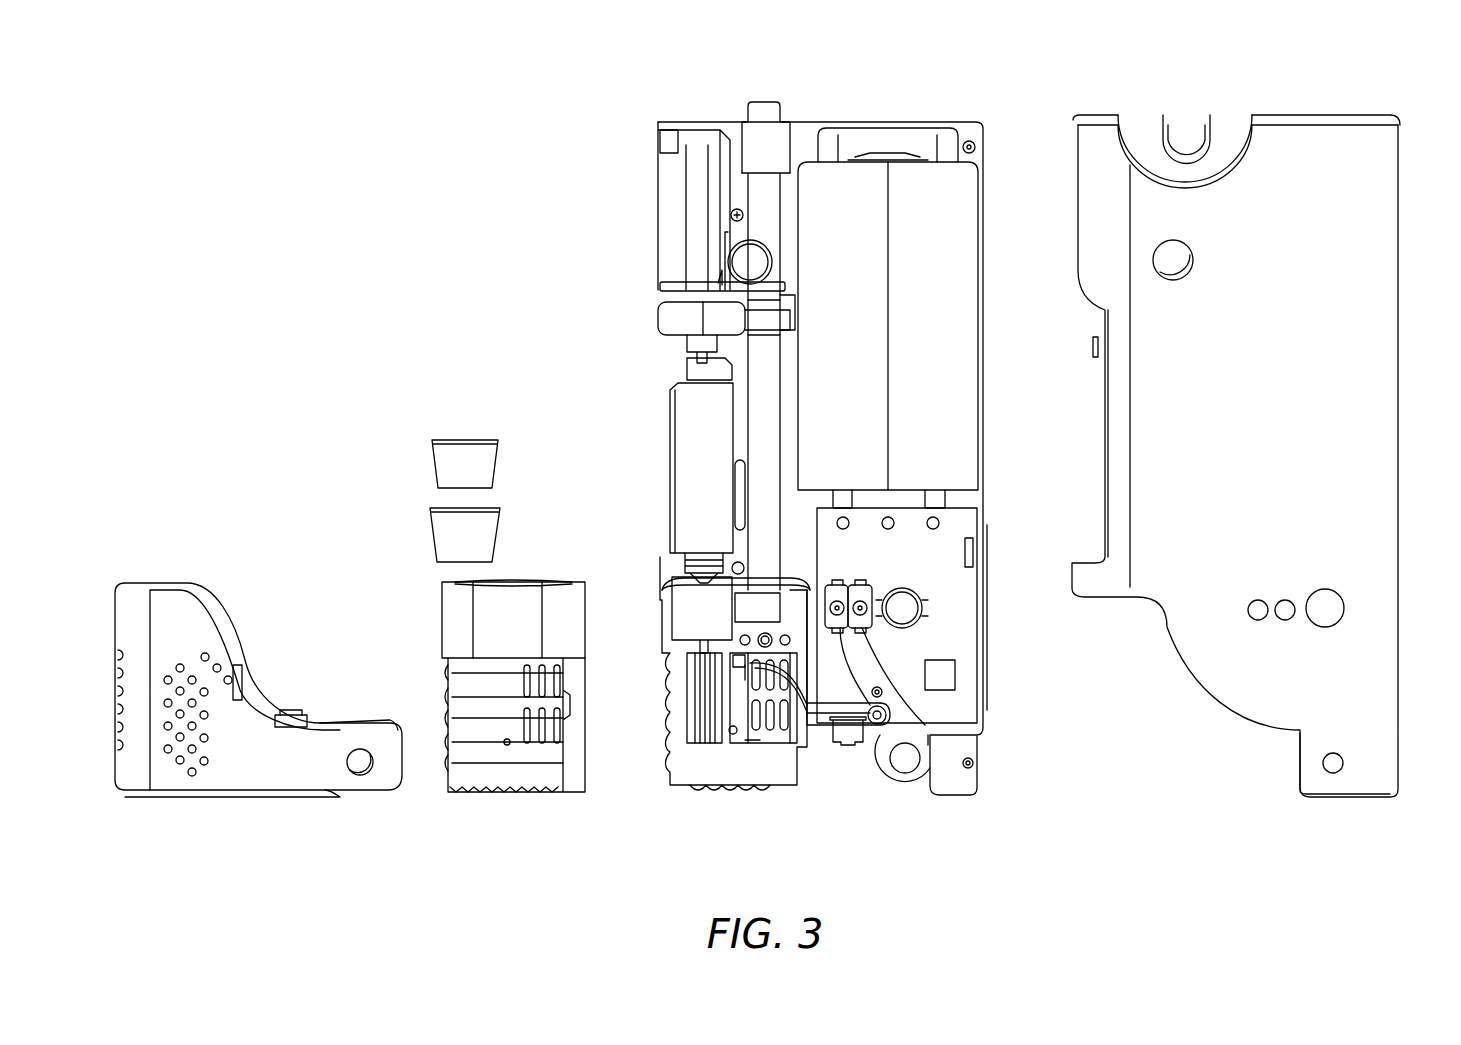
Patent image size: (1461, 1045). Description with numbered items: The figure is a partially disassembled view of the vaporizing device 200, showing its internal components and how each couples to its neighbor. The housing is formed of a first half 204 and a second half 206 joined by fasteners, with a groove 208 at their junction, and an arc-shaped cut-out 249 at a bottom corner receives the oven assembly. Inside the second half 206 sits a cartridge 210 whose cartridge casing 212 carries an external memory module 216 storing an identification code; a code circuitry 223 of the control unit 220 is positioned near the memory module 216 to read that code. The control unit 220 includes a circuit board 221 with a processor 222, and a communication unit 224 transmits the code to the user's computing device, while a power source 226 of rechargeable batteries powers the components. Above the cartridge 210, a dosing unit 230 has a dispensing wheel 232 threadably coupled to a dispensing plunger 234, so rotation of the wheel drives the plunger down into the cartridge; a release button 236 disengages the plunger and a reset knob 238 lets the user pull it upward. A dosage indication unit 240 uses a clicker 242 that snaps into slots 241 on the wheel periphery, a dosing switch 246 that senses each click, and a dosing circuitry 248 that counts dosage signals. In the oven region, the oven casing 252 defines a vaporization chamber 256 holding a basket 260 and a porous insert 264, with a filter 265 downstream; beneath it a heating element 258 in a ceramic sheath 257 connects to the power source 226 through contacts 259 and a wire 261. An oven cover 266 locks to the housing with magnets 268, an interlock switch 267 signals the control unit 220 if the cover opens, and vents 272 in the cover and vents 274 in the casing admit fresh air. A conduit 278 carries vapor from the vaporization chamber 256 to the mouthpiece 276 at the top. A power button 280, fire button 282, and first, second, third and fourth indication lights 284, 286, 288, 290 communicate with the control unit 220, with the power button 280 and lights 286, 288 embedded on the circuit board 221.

The vaporizing device 200 is at (303, 148).
The first half 204 is at (1400, 235).
The second half 206 is at (800, 122).
The groove 208 is at (740, 400).
The cartridge 210 is at (635, 528).
The cartridge casing 212 is at (672, 432).
The memory module 216 is at (725, 500).
The control unit 220 is at (1008, 708).
The circuit board 221 is at (950, 585).
The processor 222 is at (955, 675).
The code circuitry 223 is at (740, 470).
The communication unit 224 is at (973, 550).
The power source 226 is at (950, 190).
The dosing unit 230 is at (637, 305).
The dispensing wheel 232 is at (680, 315).
The dispensing plunger 234 is at (722, 285).
The release button 236 is at (700, 335).
The reset knob 238 is at (665, 140).
The dosage indication unit 240 is at (757, 380).
The slots 241 is at (770, 320).
The clicker 242 is at (770, 335).
The dosing switch 246 is at (782, 302).
The dosing circuitry 248 is at (730, 290).
The cut-out 249 is at (1262, 733).
The oven casing 252 is at (470, 792).
The vaporization chamber 256 is at (685, 593).
The ceramic sheath 257 is at (680, 755).
The heating element 258 is at (702, 745).
The contacts 259 is at (737, 665).
The basket 260 is at (432, 525).
The wire 261 is at (790, 750).
The porous insert 264 is at (432, 460).
The filter 265 is at (770, 610).
The oven cover 266 is at (290, 790).
The interlock switch 267 is at (927, 780).
The magnets 268 is at (848, 745).
The vents 272 is at (180, 760).
The vents 274 is at (507, 745).
The mouthpiece 276 is at (762, 102).
The conduit 278 is at (760, 190).
The power button 280 is at (905, 608).
The fire button 282 is at (752, 262).
The first indication light 284 is at (735, 262).
The second indication light 286 is at (935, 735).
The third indication light 288 is at (877, 724).
The fourth indication light 290 is at (725, 485).